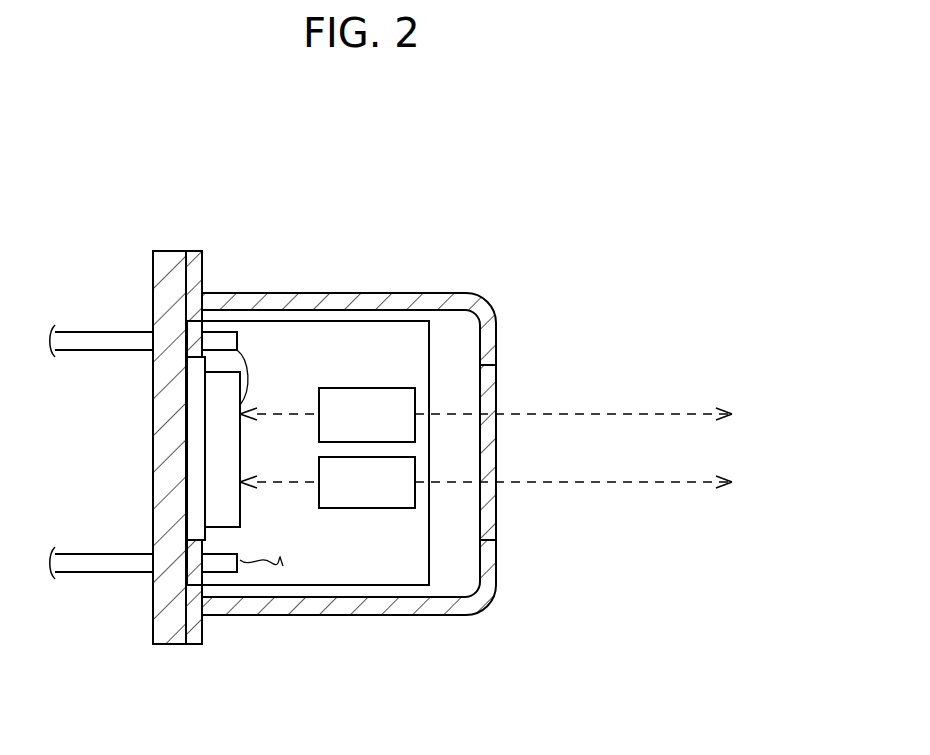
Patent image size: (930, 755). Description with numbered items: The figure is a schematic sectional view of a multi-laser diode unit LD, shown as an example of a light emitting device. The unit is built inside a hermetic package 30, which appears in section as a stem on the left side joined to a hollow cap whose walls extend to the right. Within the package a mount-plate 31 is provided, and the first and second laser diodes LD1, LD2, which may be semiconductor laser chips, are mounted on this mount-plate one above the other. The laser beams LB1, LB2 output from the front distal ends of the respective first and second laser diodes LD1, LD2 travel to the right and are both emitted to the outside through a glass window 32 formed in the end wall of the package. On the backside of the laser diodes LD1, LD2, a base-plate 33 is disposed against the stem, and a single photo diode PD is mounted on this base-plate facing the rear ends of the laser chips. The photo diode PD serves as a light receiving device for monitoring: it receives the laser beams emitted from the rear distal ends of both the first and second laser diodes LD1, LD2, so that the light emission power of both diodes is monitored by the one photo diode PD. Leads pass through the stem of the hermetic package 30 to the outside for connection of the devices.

The hermetic package 30 is at (248, 615).
The mount-plate 31 is at (333, 568).
The glass window 32 is at (496, 520).
The base-plate 33 is at (197, 490).
The photo diode PD is at (222, 420).
The multi-laser diode unit LD is at (498, 308).
The first laser diode LD1 is at (370, 403).
The second laser diode LD2 is at (372, 497).
The laser beam LB1 is at (606, 410).
The laser beam LB2 is at (660, 484).